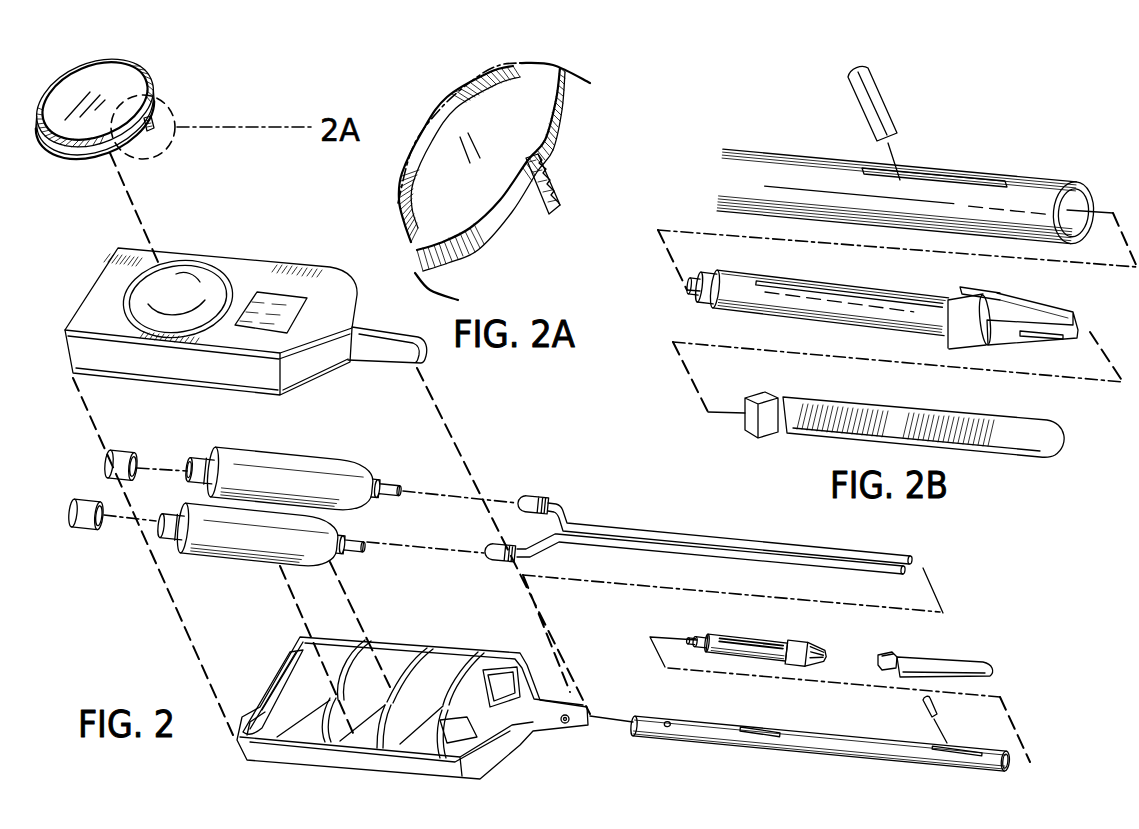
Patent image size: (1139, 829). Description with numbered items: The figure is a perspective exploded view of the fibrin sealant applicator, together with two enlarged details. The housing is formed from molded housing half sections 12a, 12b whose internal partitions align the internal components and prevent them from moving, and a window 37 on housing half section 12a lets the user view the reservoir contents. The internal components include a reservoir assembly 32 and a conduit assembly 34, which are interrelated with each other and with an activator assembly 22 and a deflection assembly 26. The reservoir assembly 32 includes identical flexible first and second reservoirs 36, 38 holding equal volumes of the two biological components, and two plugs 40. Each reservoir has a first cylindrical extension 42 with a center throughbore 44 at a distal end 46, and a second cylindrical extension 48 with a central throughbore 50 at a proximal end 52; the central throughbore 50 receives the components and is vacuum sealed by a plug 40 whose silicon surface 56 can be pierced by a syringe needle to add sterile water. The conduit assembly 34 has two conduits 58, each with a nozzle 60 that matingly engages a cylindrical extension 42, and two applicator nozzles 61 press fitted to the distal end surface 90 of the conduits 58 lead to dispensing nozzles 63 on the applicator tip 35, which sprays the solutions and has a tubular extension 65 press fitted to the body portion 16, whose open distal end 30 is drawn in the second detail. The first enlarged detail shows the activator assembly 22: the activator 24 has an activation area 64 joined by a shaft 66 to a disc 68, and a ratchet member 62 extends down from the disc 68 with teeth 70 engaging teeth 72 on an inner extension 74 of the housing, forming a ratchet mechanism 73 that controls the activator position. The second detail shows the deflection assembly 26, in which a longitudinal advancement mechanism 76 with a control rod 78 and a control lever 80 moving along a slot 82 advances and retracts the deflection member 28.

In FIG. 2, the housing half section 12a is at (246, 294).
In FIG. 2, the housing half section 12b is at (397, 638).
In FIG. 2, the body portion 16 is at (867, 742).
In FIG. 2B, the body portion 16 is at (1038, 190).
In FIG. 2, the activator assembly 22 is at (128, 127).
In FIG. 2, the activator 24 is at (83, 76).
In FIG. 2A, the activator 24 is at (472, 72).
In FIG. 2, the deflection assembly 26 is at (763, 648).
In FIG. 2B, the deflection assembly 26 is at (871, 269).
In FIG. 2, the deflection member 28 is at (977, 658).
In FIG. 2B, the deflection member 28 is at (1055, 428).
In FIG. 2B, the tube open end 30 is at (1080, 190).
In FIG. 2, the reservoir assembly 32 is at (285, 494).
In FIG. 2, the conduit assembly 34 is at (723, 510).
In FIG. 2, the applicator tip 35 is at (813, 643).
In FIG. 2B, the applicator tip 35 is at (1053, 303).
In FIG. 2, the first reservoir 36 is at (255, 452).
In FIG. 2, the window 37 is at (303, 297).
In FIG. 2, the second reservoir 38 is at (224, 542).
In FIG. 2, the plug 40 is at (80, 531).
In FIG. 2, the first cylindrical extension 42 is at (386, 480).
In FIG. 2, the center throughbore 44 is at (404, 500).
In FIG. 2, the distal end 46 is at (403, 489).
In FIG. 2, the second cylindrical extension 48 is at (209, 462).
In FIG. 2, the central throughbore 50 is at (158, 532).
In FIG. 2, the proximal end 52 is at (190, 470).
In FIG. 2, the silicon surface 56 is at (80, 501).
In FIG. 2, the conduit 58 is at (726, 543).
In FIG. 2, the nozzle 60 is at (528, 499).
In FIG. 2, the applicator nozzle 61 is at (692, 645).
In FIG. 2B, the applicator nozzle 61 is at (692, 298).
In FIG. 2, the ratchet member 62 is at (158, 112).
In FIG. 2A, the ratchet member 62 is at (552, 208).
In FIG. 2, the dispensing nozzle 63 is at (826, 662).
In FIG. 2B, the dispensing nozzle 63 is at (1048, 340).
In FIG. 2, the activation area 64 is at (120, 73).
In FIG. 2A, the activation area 64 is at (440, 105).
In FIG. 2, the tubular extension 65 is at (710, 636).
In FIG. 2B, the tubular extension 65 is at (742, 278).
In FIG. 2, the shaft 66 is at (85, 143).
In FIG. 2A, the shaft 66 is at (520, 97).
In FIG. 2, the disc 68 is at (103, 160).
In FIG. 2A, the disc 68 is at (473, 233).
In FIG. 2, the teeth 70 is at (148, 137).
In FIG. 2A, the teeth 70 is at (550, 187).
In FIG. 2, the teeth 72 is at (158, 262).
In FIG. 2A, the ratchet mechanism 73 is at (566, 170).
In FIG. 2, the inner extension 74 is at (140, 306).
In FIG. 2B, the longitudinal advancement mechanism 76 is at (918, 145).
In FIG. 2, the control rod 78 is at (884, 654).
In FIG. 2B, the control rod 78 is at (776, 403).
In FIG. 2, the control lever 80 is at (938, 716).
In FIG. 2B, the control lever 80 is at (873, 77).
In FIG. 2, the slot 82 is at (963, 745).
In FIG. 2B, the slot 82 is at (933, 172).
In FIG. 2, the distal end surface 90 is at (912, 558).